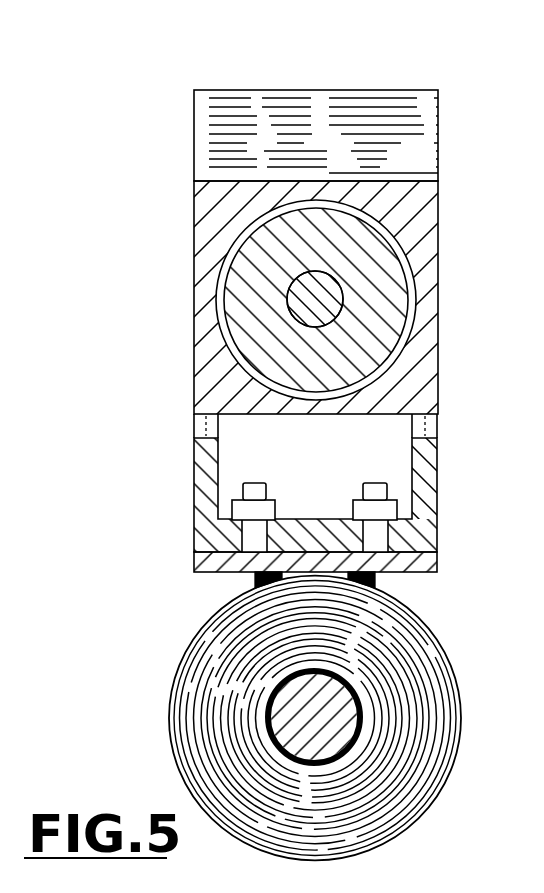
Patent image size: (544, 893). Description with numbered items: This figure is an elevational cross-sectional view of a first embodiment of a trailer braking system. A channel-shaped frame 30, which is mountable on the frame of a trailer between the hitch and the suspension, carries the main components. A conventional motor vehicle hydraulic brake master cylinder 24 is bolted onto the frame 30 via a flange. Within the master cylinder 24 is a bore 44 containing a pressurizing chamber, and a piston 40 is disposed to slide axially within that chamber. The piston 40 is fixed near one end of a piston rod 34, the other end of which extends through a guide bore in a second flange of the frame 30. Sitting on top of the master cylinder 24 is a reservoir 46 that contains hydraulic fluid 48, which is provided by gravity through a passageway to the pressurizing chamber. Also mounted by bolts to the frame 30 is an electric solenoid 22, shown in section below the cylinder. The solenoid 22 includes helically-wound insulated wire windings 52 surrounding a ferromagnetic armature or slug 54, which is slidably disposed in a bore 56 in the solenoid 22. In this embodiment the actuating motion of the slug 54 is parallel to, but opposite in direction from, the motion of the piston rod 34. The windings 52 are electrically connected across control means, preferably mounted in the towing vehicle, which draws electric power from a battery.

The electric solenoid 22 is at (437, 642).
The hydraulic brake master cylinder 24 is at (438, 243).
The channel-shaped frame 30 is at (420, 479).
The piston rod 34 is at (313, 300).
The piston 40 is at (357, 332).
The bore 44 is at (403, 291).
The reservoir 46 is at (326, 90).
The hydraulic fluid 48 is at (405, 160).
The wire windings 52 is at (427, 708).
The ferromagnetic armature or slug 54 is at (325, 727).
The bore 56 is at (352, 752).